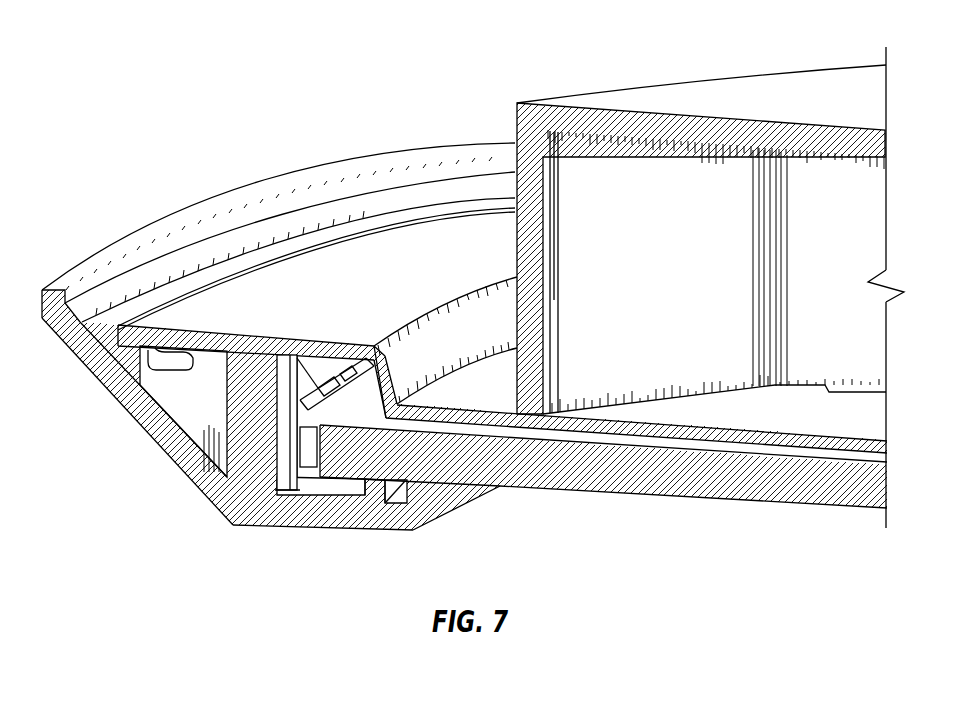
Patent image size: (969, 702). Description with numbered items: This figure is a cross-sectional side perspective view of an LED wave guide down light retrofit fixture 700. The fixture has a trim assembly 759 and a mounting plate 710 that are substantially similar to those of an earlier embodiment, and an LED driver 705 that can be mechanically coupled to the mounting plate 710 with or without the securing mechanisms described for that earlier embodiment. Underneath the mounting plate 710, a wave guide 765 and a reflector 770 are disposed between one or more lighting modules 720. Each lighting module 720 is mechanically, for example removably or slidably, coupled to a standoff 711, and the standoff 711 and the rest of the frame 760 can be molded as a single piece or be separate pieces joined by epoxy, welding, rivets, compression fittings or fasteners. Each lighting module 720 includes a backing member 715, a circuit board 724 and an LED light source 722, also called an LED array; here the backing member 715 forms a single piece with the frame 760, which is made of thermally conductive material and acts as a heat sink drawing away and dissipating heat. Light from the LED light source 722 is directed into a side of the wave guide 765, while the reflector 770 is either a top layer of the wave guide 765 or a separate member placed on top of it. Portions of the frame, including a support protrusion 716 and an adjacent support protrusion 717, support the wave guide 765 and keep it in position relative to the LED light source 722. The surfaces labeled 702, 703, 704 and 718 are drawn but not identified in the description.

The LED wave guide down light retrofit fixture 700 is at (310, 110).
The inner surface 702 is at (418, 276).
The inclined wall surface 703 is at (472, 347).
The floor surface 704 is at (496, 392).
The LED driver 705 is at (588, 102).
The mounting plate 710 is at (440, 250).
The standoff 711 is at (182, 430).
The backing member 715 is at (247, 408).
The support protrusion 716 is at (372, 497).
The support protrusion 717 is at (420, 507).
The outer skin 718 is at (250, 245).
The lighting module 720 is at (266, 483).
The LED light source 722 is at (308, 466).
The circuit board 724 is at (290, 491).
The trim assembly 759 is at (132, 449).
The frame 760 is at (137, 410).
The wave guide 765 is at (648, 497).
The reflector 770 is at (370, 362).